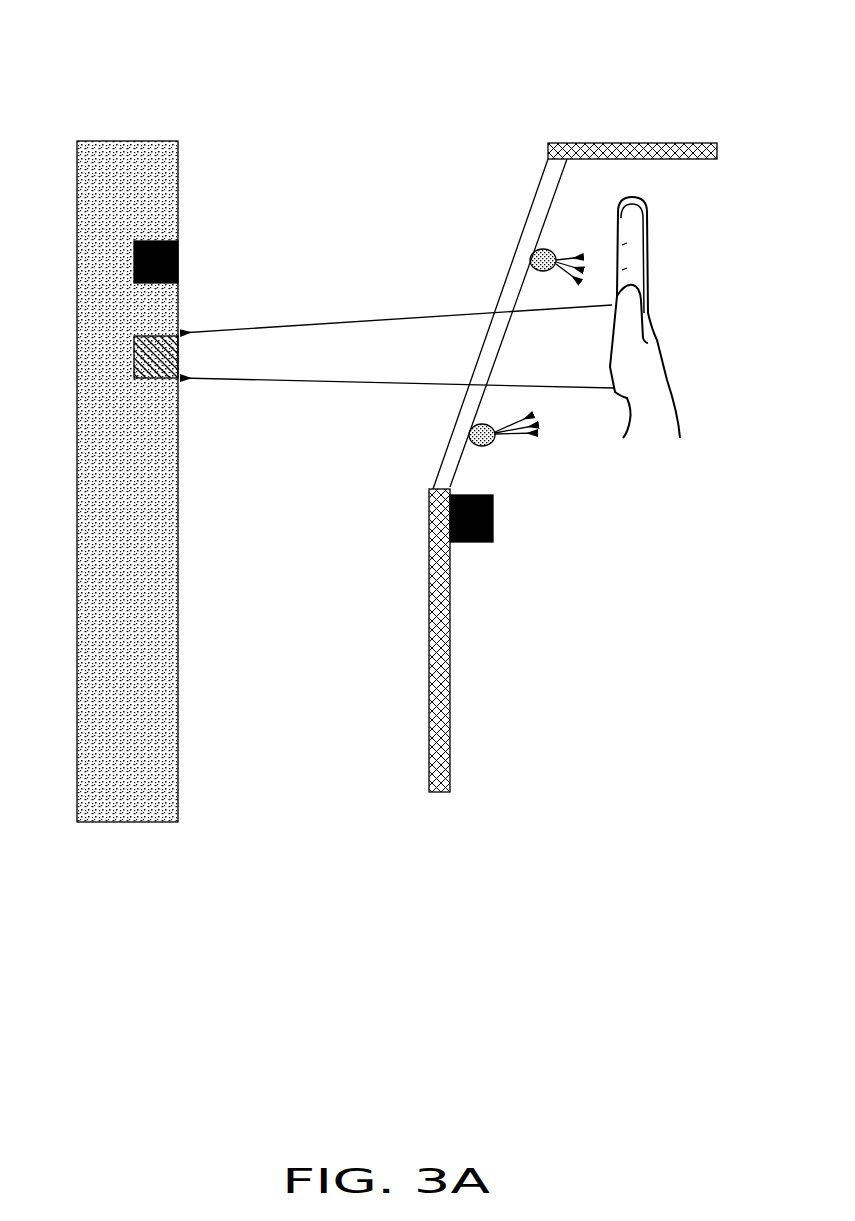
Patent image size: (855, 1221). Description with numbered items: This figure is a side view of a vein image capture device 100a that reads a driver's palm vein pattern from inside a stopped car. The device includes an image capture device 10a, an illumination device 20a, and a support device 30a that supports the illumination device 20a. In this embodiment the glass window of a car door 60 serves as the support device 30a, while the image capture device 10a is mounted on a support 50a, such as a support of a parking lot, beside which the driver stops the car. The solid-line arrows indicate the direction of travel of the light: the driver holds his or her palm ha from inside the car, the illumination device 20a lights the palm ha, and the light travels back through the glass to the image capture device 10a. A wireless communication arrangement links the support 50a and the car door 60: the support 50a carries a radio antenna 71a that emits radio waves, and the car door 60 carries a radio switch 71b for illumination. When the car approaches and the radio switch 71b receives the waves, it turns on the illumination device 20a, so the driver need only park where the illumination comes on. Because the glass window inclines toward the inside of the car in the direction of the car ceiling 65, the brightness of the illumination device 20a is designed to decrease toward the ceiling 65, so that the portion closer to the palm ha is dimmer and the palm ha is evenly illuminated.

The vein image capture device 100a is at (452, 58).
The support 50a is at (179, 613).
The radio antenna 71a is at (178, 235).
The image capture device 10a is at (182, 330).
The ceiling 65 is at (637, 143).
The support device 30a is at (458, 470).
The illumination device 20a is at (483, 449).
The radio switch 71b is at (493, 542).
The car door 60 is at (450, 650).
The palm ha is at (650, 305).